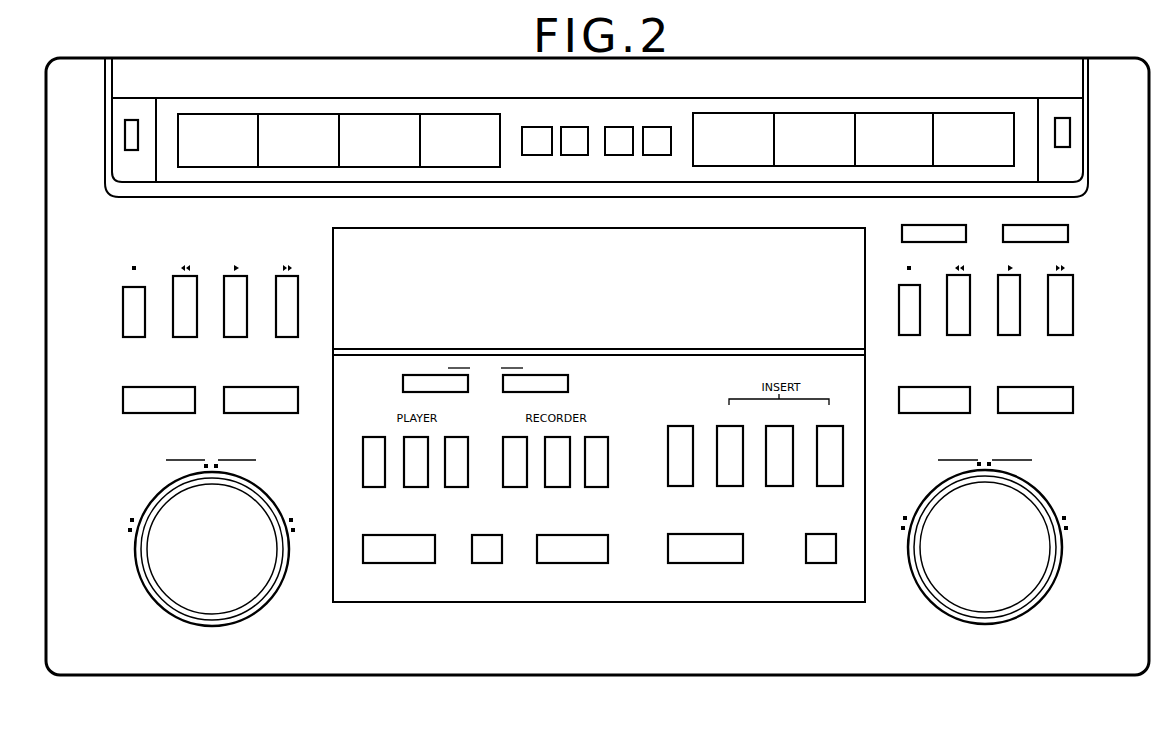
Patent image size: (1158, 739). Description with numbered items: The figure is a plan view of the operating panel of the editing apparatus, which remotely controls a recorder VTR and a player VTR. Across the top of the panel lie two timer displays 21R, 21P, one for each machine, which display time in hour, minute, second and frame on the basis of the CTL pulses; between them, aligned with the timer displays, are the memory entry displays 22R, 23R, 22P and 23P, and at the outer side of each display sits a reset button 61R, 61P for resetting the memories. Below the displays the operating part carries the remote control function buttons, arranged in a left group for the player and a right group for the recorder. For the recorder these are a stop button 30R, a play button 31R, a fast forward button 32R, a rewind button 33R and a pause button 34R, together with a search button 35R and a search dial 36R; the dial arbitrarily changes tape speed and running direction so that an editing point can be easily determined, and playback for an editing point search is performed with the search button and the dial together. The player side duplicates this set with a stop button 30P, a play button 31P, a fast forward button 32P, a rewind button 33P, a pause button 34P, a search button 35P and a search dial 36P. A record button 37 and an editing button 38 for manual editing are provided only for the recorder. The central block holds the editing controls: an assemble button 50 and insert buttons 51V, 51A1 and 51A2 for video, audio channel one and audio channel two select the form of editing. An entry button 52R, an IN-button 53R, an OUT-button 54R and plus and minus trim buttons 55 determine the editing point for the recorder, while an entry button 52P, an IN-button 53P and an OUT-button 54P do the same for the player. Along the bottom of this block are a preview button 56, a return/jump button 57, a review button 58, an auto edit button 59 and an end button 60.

The timer display 21P is at (456, 114).
The timer display 21R is at (832, 113).
The memory entry display 22P is at (537, 127).
The memory entry display 23P is at (575, 127).
The memory entry display 22R is at (622, 127).
The memory entry display 23R is at (660, 127).
The reset button 61P is at (125, 148).
The reset button 61R is at (1070, 135).
The stop button 30P is at (145, 327).
The play button 31P is at (247, 325).
The fast forward button 32P is at (298, 323).
The rewind button 33P is at (197, 322).
The pause button 34P is at (258, 413).
The search button 35P is at (142, 413).
The search dial 36P is at (266, 598).
The stop button 30R is at (920, 327).
The play button 31R is at (1020, 325).
The fast forward button 32R is at (1073, 323).
The rewind button 33R is at (970, 322).
The pause button 34R is at (1040, 413).
The search button 35R is at (932, 413).
The search dial 36R is at (1043, 592).
The record button 37 is at (966, 229).
The editing button 38 is at (1068, 229).
The trim buttons 55 is at (403, 386).
The IN-button 53P is at (365, 487).
The entry button 52P is at (416, 487).
The OUT-button 54P is at (468, 478).
The IN-button 53R is at (510, 487).
The entry button 52R is at (555, 487).
The OUT-button 54R is at (608, 478).
The assemble button 50 is at (680, 486).
The insert button 51V is at (729, 486).
The insert button 51A1 is at (780, 486).
The insert button 51A2 is at (828, 486).
The preview button 56 is at (395, 563).
The return/jump button 57 is at (483, 563).
The review button 58 is at (553, 563).
The auto edit button 59 is at (683, 563).
The end button 60 is at (820, 563).